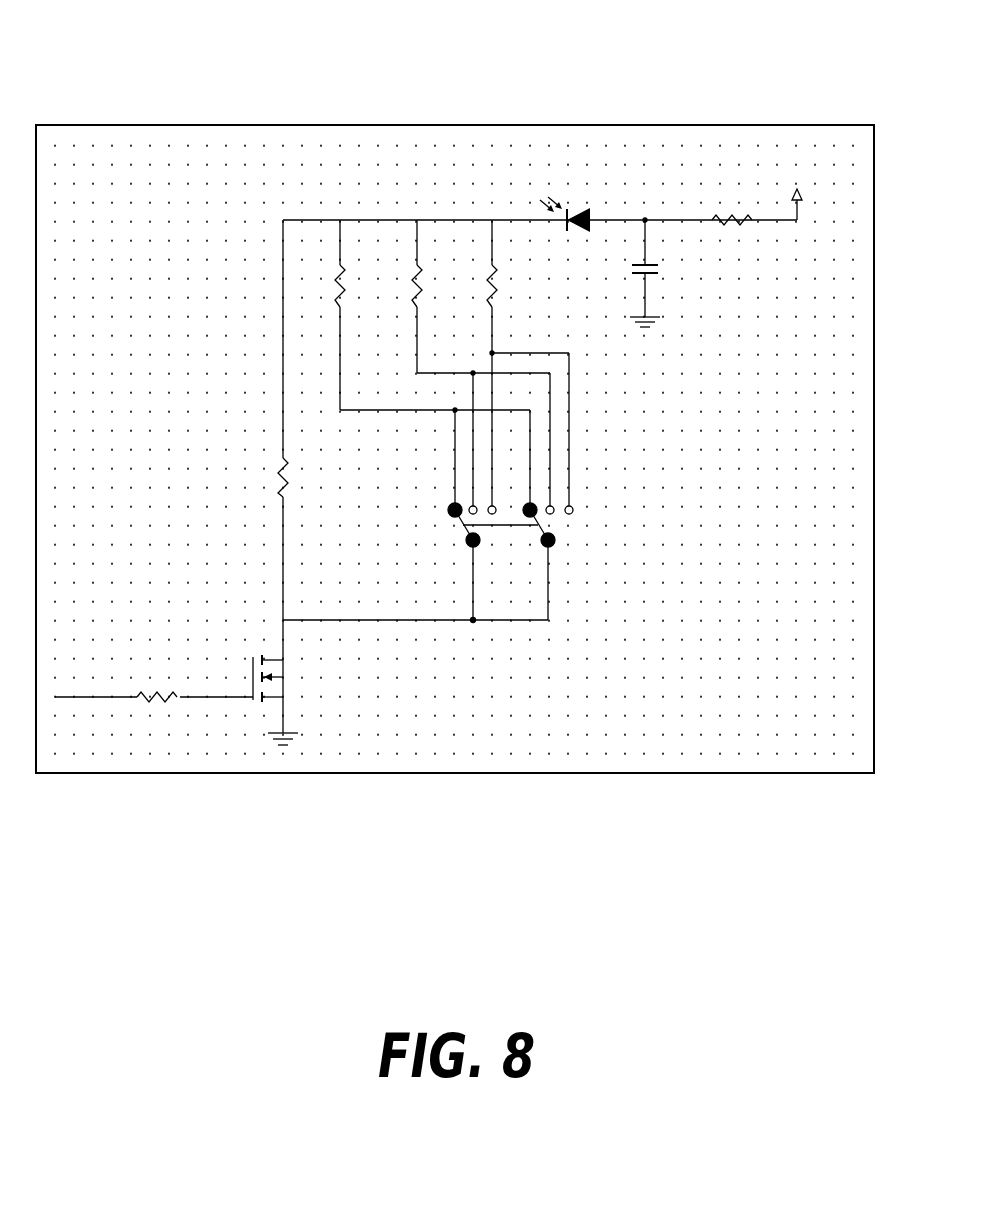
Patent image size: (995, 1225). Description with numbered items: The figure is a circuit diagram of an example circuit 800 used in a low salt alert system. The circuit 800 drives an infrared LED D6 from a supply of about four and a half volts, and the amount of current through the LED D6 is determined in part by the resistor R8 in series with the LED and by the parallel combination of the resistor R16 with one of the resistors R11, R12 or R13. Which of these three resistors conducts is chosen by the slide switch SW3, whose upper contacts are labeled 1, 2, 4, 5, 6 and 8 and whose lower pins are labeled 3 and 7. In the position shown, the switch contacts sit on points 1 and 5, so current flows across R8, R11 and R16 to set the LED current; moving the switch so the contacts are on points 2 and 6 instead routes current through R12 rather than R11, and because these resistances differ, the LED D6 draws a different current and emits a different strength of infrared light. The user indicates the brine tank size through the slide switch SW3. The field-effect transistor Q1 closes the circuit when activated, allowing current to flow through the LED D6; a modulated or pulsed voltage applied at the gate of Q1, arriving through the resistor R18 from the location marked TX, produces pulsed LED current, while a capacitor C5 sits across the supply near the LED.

The circuit 800 is at (744, 61).
The resistor R8 is at (732, 223).
The resistor R11 is at (363, 315).
The resistor R12 is at (441, 296).
The resistor R13 is at (510, 286).
The resistor R16 is at (302, 477).
The resistor R18 is at (157, 696).
The capacitor C5 is at (662, 272).
The infrared LED D6 is at (567, 203).
The field-effect transistor Q1 is at (286, 684).
The slide switch SW3 is at (595, 565).
The switch point 1 is at (458, 463).
The switch point 2 is at (477, 443).
The switch pin 3 is at (476, 576).
The switch pin 4 is at (497, 433).
The switch point 5 is at (534, 463).
The switch point 6 is at (554, 443).
The switch pin 7 is at (552, 576).
The switch pin 8 is at (573, 433).